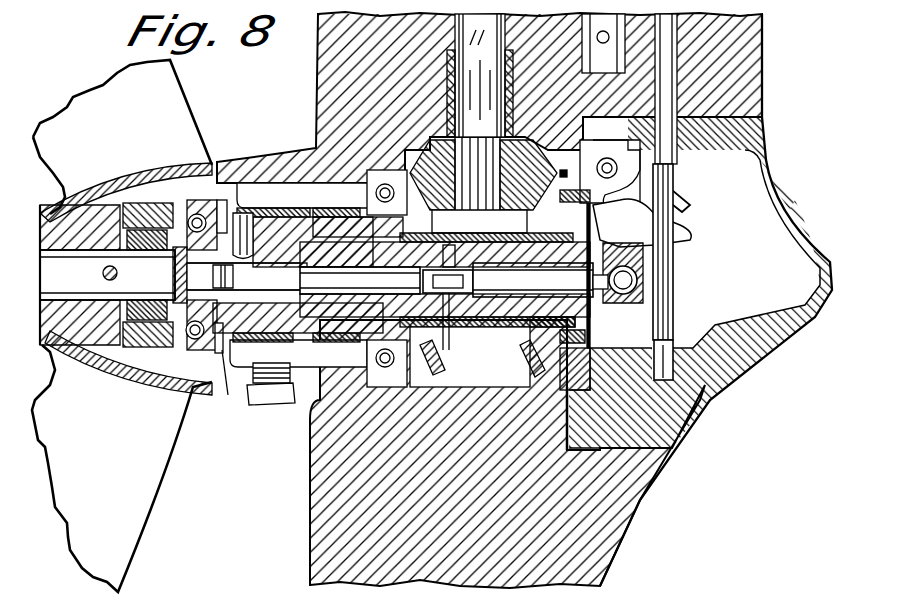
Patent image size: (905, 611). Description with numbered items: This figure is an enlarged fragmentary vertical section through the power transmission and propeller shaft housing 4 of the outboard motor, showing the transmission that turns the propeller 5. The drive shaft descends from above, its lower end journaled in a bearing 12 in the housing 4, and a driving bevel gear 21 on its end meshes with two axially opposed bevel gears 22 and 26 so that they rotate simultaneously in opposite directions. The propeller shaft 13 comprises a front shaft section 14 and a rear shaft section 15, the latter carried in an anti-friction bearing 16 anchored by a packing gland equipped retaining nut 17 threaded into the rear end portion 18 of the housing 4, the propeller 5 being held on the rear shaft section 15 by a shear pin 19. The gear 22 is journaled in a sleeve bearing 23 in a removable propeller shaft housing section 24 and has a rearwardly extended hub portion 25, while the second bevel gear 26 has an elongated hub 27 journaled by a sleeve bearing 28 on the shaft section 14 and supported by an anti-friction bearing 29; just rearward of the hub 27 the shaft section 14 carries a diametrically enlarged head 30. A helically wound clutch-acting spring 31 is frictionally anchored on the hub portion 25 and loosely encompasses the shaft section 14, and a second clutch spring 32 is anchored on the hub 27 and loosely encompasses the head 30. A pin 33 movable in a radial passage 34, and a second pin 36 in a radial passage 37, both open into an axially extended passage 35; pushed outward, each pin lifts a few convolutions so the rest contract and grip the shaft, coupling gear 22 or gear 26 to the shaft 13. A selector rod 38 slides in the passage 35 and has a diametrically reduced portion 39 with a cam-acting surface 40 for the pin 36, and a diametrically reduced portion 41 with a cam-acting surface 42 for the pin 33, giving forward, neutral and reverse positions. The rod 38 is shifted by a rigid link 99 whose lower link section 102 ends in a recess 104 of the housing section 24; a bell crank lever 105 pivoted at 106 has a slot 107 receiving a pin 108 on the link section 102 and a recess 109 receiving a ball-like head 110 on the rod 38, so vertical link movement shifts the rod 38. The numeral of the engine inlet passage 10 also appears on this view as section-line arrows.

The power transmission and propeller shaft housing 4 is at (313, 90).
The propeller 5 is at (83, 553).
The inlet passage 10 is at (448, 218).
The bearing 12 is at (452, 57).
The propeller shaft 13 is at (122, 298).
The front shaft section 14 is at (483, 330).
The rear shaft section 15 is at (78, 282).
The anti-friction bearing 16 is at (195, 350).
The retaining nut 17 is at (145, 350).
The rear end portion 18 is at (160, 352).
The shear pin 19 is at (117, 273).
The bevel gear 21 is at (486, 189).
The bevel gear 22 is at (600, 244).
The sleeve bearing 23 is at (588, 348).
The removable propeller shaft housing section 24 is at (673, 422).
The hub portion 25 is at (590, 343).
The second bevel gear 26 is at (432, 372).
The elongated hub 27 is at (372, 363).
The sleeve bearing 28 is at (298, 334).
The anti-friction bearing 29 is at (370, 194).
The diametrically enlarged head 30 is at (313, 228).
The helically wound clutch-acting spring 31 is at (539, 334).
The second helically wound clutch-acting spring 32 is at (298, 350).
The pin 33 is at (360, 280).
The passage 34 is at (462, 269).
The axially extended passage 35 is at (222, 340).
The second pin 36 is at (303, 200).
The passage 37 is at (236, 198).
The selector rod 38 is at (533, 280).
The diametrically reduced portion 39 is at (262, 403).
The cam-acting surface 40 is at (228, 398).
The diametrically reduced portion 41 is at (453, 331).
The cam-acting surface 42 is at (515, 365).
The rigid link 99 is at (683, 88).
The link section 102 is at (673, 288).
The recess 104 is at (665, 365).
The bell crank lever 105 is at (650, 242).
The pivot 106 is at (617, 165).
The slot 107 is at (680, 226).
The pin 108 is at (690, 202).
The recess 109 is at (655, 300).
The ball-like head 110 is at (637, 280).